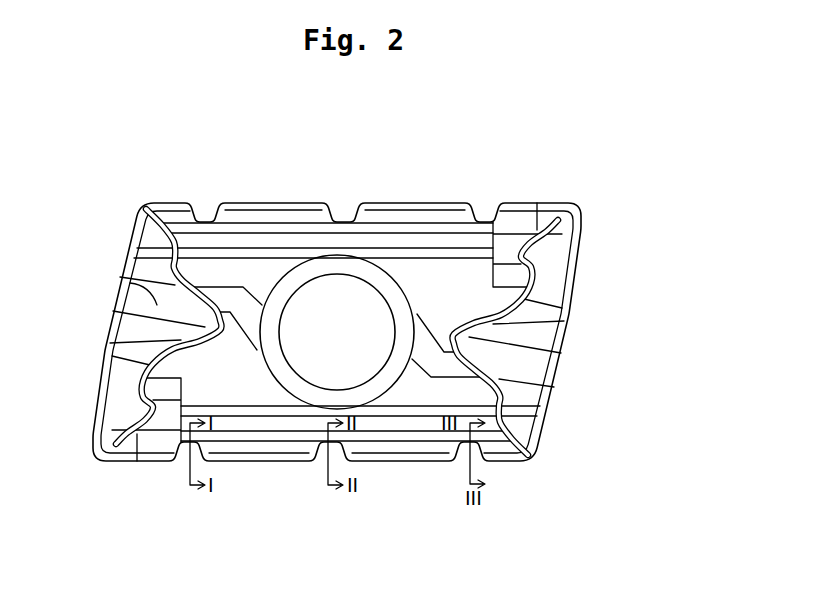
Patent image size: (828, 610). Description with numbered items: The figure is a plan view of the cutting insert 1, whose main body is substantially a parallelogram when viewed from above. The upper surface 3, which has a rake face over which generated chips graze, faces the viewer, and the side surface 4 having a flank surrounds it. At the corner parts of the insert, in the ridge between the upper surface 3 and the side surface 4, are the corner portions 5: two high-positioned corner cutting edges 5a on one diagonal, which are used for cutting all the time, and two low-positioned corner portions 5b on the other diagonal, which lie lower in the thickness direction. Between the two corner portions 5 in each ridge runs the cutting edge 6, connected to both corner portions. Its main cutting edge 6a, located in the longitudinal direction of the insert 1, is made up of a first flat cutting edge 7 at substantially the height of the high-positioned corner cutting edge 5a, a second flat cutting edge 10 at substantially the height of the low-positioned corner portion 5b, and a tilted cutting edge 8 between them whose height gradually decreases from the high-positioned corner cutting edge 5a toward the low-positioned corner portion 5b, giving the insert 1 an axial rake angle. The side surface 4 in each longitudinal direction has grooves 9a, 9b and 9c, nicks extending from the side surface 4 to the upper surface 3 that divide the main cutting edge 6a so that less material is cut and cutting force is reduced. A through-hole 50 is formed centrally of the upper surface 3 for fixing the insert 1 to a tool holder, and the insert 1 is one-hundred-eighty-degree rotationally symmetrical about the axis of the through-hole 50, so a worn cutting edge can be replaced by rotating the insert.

The cutting insert 1 is at (566, 411).
The upper surface 3 is at (110, 287).
The side surface 4 is at (120, 317).
The corner portion 5 is at (350, 335).
The high-positioned corner cutting edge 5a is at (570, 210).
The low-positioned corner portion 5b is at (145, 205).
The cutting edge 6 is at (92, 404).
The main cutting edge 6a is at (590, 110).
The first flat cutting edge 7 is at (537, 203).
The tilted cutting edge 8 is at (275, 203).
The groove 9a is at (488, 218).
The groove 9b is at (346, 218).
The groove 9c is at (206, 218).
The second flat cutting edge 10 is at (158, 203).
The through-hole 50 is at (356, 338).